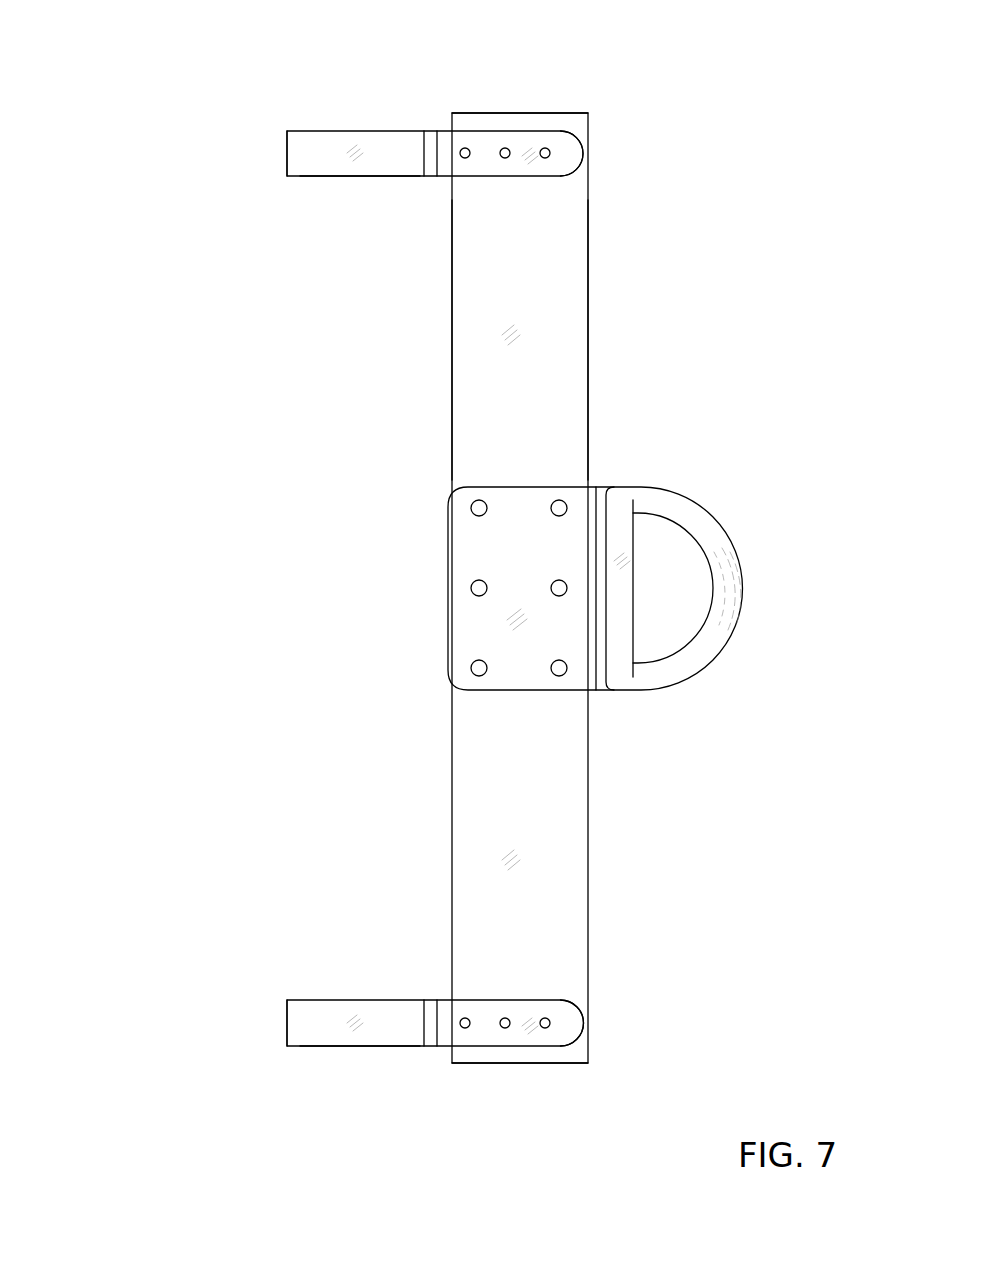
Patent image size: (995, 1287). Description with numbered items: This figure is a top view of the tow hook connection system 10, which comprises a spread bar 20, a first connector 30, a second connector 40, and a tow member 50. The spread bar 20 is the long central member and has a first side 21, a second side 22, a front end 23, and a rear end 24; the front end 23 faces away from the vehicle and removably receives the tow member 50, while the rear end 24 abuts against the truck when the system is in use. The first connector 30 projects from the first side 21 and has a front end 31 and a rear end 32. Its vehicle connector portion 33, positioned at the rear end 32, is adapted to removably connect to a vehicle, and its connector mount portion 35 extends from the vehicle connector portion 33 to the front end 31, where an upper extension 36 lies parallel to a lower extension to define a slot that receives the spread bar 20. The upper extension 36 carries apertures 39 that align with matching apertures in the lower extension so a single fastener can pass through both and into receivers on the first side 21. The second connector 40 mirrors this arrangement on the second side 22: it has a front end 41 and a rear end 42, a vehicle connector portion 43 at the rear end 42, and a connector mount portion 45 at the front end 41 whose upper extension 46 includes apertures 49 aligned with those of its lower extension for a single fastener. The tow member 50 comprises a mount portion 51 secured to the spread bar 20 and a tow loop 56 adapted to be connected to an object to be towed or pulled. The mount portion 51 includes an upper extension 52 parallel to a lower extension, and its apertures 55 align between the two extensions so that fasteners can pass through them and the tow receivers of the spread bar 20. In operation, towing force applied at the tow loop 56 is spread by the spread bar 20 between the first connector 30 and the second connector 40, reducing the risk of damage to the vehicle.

The tow hook connection system 10 is at (163, 80).
The spread bar 20 is at (450, 788).
The first side 21 is at (558, 1063).
The second side 22 is at (520, 113).
The front end 23 is at (588, 348).
The rear end 24 is at (452, 352).
The first connector 30 is at (342, 1000).
The front end 31 is at (582, 1022).
The rear end 32 is at (287, 1022).
The vehicle connector portion 33 is at (335, 1046).
The connector mount portion 35 is at (480, 1017).
The upper extension 36 is at (528, 1013).
The apertures 39 is at (545, 1028).
The second connector 40 is at (340, 130).
The front end 41 is at (582, 152).
The rear end 42 is at (287, 152).
The vehicle connector portion 43 is at (335, 176).
The connector mount portion 45 is at (480, 147).
The upper extension 46 is at (528, 143).
The apertures 49 is at (545, 158).
The tow member 50 is at (687, 492).
The mount portion 51 is at (448, 533).
The upper extension 52 is at (498, 565).
The apertures 55 is at (553, 500).
The tow loop 56 is at (743, 588).